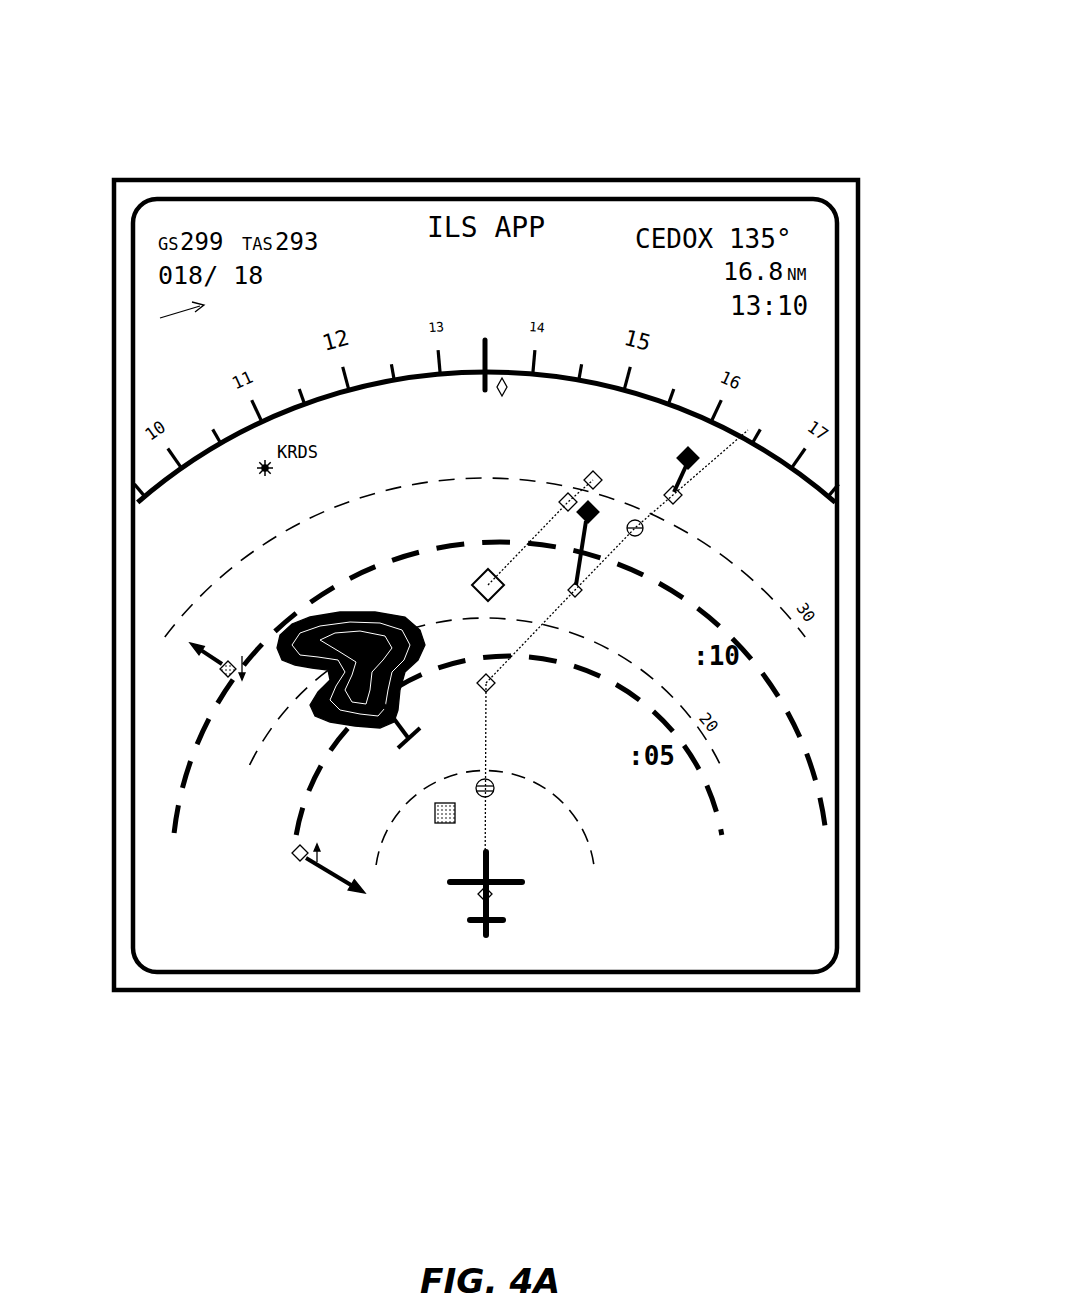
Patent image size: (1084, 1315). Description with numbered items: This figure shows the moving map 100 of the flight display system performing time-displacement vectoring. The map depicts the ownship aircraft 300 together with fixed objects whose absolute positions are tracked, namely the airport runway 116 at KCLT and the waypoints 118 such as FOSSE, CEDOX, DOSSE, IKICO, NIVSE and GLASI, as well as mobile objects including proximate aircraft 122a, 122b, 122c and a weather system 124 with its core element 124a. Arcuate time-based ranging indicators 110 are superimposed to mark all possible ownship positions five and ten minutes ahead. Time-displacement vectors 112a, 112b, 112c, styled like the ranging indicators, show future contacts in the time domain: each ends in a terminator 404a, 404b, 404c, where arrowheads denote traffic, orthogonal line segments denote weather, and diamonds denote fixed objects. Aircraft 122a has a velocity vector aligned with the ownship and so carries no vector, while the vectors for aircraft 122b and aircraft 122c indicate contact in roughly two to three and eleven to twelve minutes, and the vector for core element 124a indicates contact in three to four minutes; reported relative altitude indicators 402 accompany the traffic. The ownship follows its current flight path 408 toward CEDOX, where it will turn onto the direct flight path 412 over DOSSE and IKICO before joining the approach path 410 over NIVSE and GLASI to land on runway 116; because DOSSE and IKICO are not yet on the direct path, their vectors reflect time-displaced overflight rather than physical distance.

The moving map 100 is at (138, 86).
The time-based ranging indicators 110 is at (713, 778).
The time-displacement vector 112a is at (220, 665).
The time-displacement vector 112b is at (420, 730).
The time-displacement vector 112c is at (684, 478).
The airport runway 116 is at (475, 577).
The waypoints 118 is at (585, 590).
The aircraft 122a is at (457, 815).
The aircraft 122b is at (296, 862).
The aircraft 122c is at (223, 674).
The weather system 124 is at (377, 618).
The core element 124a is at (300, 647).
The aircraft 300 is at (480, 920).
The relative altitude indicators 402 is at (204, 704).
The terminator 404a is at (190, 643).
The terminator 404b is at (398, 730).
The terminator 404c is at (697, 460).
The current flight path 408 is at (487, 718).
The approach path 410 is at (510, 560).
The direct flight path 412 is at (557, 610).